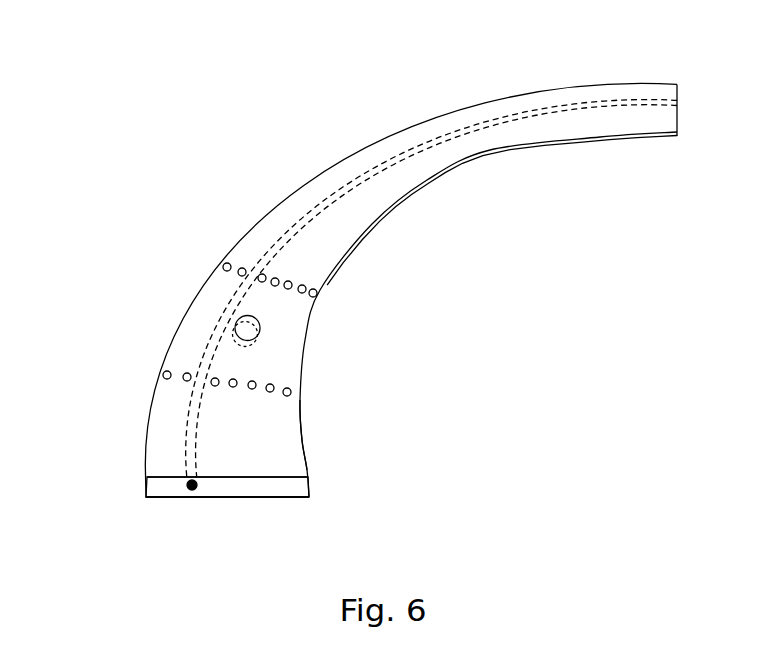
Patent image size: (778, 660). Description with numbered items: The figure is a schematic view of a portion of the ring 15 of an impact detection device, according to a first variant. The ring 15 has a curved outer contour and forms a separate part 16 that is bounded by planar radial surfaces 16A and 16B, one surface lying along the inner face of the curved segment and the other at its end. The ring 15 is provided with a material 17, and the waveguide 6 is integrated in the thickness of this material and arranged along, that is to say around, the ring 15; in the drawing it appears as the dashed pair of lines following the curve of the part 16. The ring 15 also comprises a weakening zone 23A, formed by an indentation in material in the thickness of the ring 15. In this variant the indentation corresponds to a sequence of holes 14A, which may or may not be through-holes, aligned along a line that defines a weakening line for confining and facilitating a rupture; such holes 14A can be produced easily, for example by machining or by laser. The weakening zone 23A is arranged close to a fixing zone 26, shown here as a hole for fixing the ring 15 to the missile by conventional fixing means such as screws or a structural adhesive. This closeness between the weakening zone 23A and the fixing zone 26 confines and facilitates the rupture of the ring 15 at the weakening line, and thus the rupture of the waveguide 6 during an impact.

The waveguide 6 is at (592, 101).
The holes 14A is at (303, 293).
The ring 15 is at (343, 232).
The separate part 16 is at (309, 139).
The planar radial surface 16A is at (270, 454).
The planar radial surface 16B is at (273, 506).
The material 17 is at (160, 487).
The weakening zone 23A is at (210, 261).
The fixing zone 26 is at (243, 332).